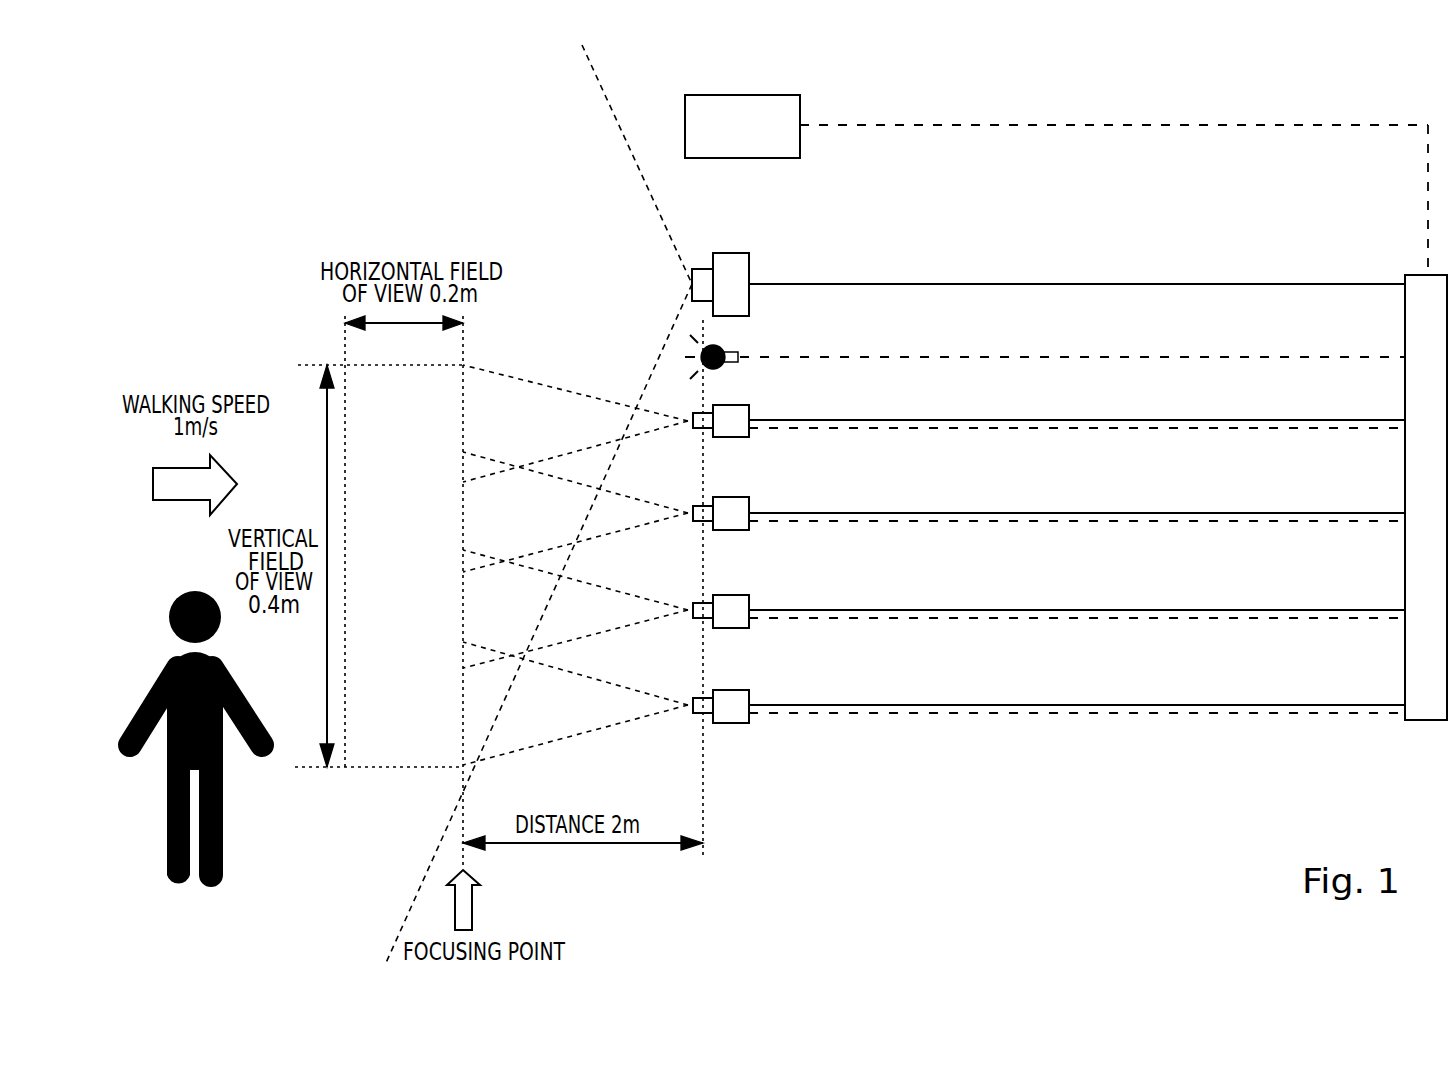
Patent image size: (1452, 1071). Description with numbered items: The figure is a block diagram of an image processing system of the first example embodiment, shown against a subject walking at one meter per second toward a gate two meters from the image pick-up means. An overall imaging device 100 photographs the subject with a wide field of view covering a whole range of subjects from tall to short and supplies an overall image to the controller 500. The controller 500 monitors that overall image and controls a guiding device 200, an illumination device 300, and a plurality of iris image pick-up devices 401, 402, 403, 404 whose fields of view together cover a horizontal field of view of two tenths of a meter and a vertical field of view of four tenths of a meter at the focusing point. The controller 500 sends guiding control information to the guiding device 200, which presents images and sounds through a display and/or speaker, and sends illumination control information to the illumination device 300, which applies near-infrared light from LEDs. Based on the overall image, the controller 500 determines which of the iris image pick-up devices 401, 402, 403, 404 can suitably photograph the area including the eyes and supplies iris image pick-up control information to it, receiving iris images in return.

The overall imaging device 100 is at (736, 252).
The guiding device 200 is at (800, 107).
The illumination device 300 is at (724, 348).
The iris image pick-up device 401 is at (740, 438).
The iris image pick-up device 402 is at (740, 531).
The iris image pick-up device 403 is at (738, 629).
The iris image pick-up device 404 is at (736, 724).
The controller 500 is at (1418, 722).